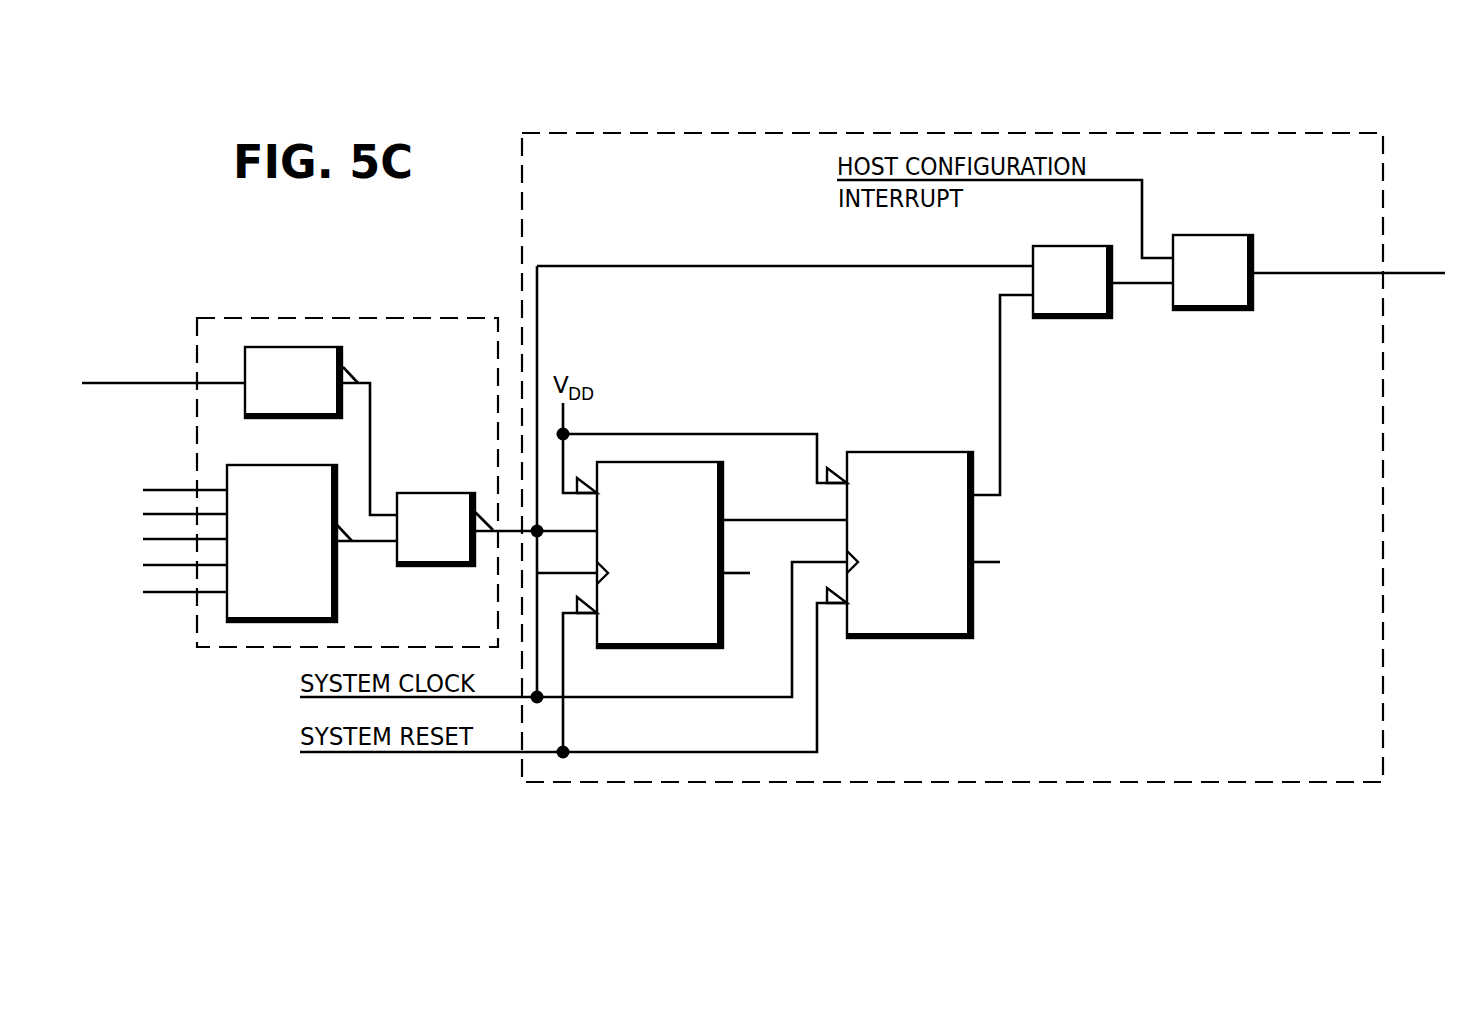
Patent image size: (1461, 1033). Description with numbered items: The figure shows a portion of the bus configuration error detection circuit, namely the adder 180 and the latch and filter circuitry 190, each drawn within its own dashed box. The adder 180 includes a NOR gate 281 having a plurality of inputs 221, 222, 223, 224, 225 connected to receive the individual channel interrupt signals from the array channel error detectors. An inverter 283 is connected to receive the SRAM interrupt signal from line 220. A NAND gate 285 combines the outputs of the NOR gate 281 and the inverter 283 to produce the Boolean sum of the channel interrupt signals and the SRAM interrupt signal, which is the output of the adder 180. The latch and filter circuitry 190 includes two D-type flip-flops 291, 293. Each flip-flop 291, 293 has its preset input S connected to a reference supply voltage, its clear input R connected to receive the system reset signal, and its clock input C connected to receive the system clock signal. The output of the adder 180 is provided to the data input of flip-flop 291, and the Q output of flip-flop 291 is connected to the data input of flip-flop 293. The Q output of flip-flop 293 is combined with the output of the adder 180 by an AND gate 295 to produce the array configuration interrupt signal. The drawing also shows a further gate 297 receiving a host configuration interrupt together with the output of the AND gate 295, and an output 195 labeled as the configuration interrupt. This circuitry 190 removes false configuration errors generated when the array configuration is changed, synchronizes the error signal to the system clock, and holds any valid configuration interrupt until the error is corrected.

The adder 180 is at (260, 318).
The latch and filter circuitry 190 is at (1172, 135).
The configuration interrupt output 195 is at (1293, 275).
The line 220 is at (158, 382).
The input 221 is at (163, 488).
The input 222 is at (148, 514).
The input 223 is at (148, 540).
The input 224 is at (148, 566).
The input 225 is at (153, 593).
The NOR gate 281 is at (337, 617).
The inverter 283 is at (343, 350).
The NAND gate 285 is at (407, 492).
The flip-flop 291 is at (700, 650).
The flip-flop 293 is at (968, 640).
The AND gate 295 is at (1107, 318).
The OR gate 297 is at (1213, 235).